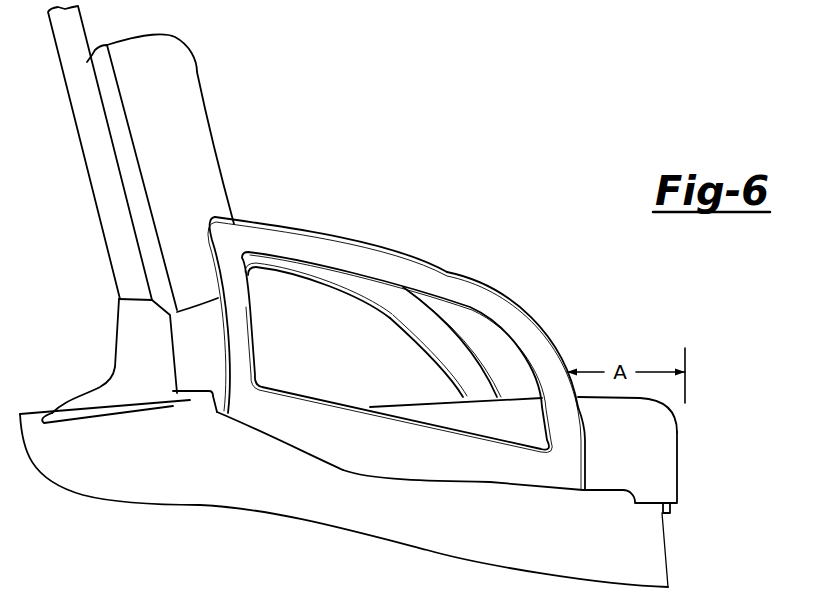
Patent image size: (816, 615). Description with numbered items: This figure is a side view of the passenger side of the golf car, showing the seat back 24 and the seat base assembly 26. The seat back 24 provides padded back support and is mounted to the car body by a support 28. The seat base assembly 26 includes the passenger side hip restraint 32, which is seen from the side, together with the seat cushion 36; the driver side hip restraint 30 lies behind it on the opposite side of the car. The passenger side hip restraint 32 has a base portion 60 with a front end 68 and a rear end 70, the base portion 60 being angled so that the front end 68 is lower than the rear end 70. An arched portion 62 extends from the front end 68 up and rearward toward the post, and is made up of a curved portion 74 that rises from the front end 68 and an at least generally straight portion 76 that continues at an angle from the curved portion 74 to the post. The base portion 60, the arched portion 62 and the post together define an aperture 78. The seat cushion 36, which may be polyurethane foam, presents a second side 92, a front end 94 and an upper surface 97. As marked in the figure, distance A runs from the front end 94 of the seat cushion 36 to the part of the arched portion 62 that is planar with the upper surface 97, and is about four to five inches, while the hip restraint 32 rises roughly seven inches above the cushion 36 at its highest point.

The seat back 24 is at (197, 72).
The support 28 is at (123, 363).
The passenger side hip restraint 32 is at (232, 226).
The arched portion 62 is at (331, 230).
The straight portion 76 is at (447, 270).
The curved portion 74 is at (545, 340).
The aperture 78 is at (343, 273).
The driver side hip restraint 30 is at (385, 322).
The upper surface 97 is at (440, 397).
The rear end 70 is at (242, 408).
The base portion 60 is at (350, 460).
The front end 68 is at (568, 478).
The seat cushion 36 is at (677, 443).
The seat base assembly 26 is at (688, 468).
The second side 92 is at (647, 492).
The front end 94 is at (678, 497).